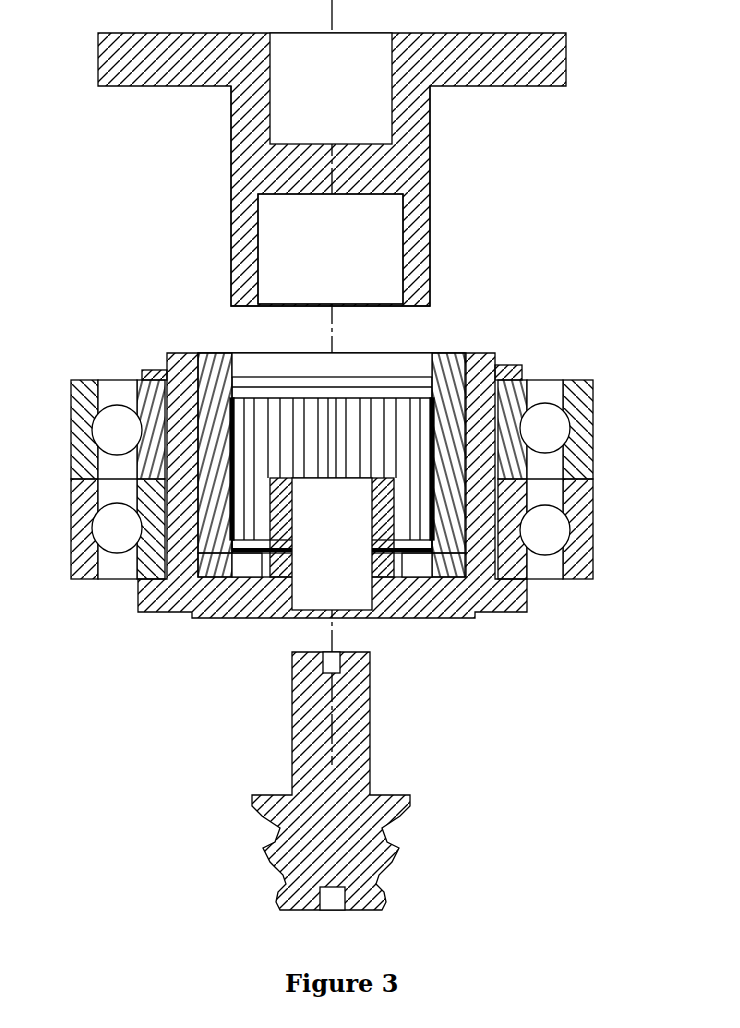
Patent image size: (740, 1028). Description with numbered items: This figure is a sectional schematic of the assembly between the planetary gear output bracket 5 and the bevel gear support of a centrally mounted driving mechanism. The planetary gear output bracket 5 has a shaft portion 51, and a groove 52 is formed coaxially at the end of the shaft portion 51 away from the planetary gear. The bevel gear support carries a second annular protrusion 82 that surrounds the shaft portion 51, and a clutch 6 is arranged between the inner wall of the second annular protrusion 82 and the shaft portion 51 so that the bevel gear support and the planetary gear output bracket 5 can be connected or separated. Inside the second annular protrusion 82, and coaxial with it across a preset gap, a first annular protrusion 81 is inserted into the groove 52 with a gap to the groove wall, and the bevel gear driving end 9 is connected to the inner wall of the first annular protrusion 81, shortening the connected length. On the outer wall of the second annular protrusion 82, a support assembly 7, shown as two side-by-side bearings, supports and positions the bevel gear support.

The planetary gear output bracket 5 is at (358, 164).
The shaft portion 51 is at (243, 182).
The groove 52 is at (353, 247).
The clutch 6 is at (440, 428).
The support assembly 7 is at (118, 430).
The first annular protrusion 81 is at (375, 508).
The second annular protrusion 82 is at (473, 525).
The bevel gear driving end 9 is at (337, 737).